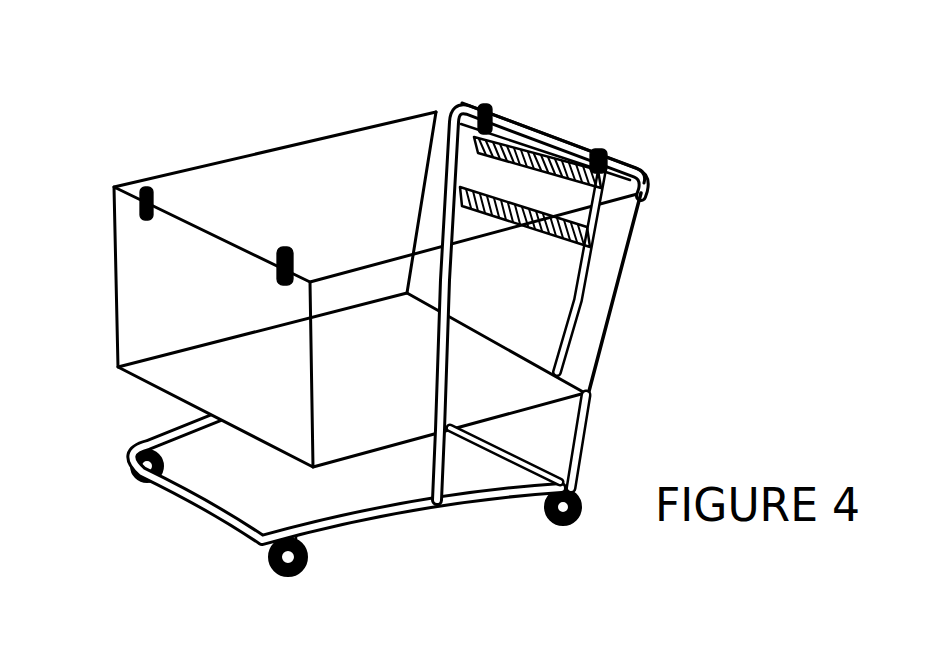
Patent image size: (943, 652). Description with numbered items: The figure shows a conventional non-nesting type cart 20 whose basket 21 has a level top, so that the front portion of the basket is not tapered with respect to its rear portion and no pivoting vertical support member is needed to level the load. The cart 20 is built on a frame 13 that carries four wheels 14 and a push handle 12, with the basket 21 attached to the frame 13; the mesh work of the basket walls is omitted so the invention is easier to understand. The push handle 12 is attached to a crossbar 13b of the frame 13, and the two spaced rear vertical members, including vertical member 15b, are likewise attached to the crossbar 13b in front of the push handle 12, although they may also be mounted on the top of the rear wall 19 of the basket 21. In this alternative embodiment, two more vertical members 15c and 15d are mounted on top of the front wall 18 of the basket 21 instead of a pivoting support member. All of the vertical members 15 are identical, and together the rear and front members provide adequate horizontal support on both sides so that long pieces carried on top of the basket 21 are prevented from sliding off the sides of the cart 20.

The cart 20 is at (327, 71).
The basket 21 is at (293, 145).
The front wall 18 is at (137, 346).
The push handle 12 is at (655, 174).
The frame 13 is at (589, 432).
The crossbar 13b is at (533, 133).
The wheels 14 is at (310, 553).
The vertical members 15 is at (488, 103).
The vertical member 15b is at (605, 148).
The vertical member 15c is at (157, 195).
The vertical member 15d is at (294, 247).
The rear wall 19 is at (596, 306).